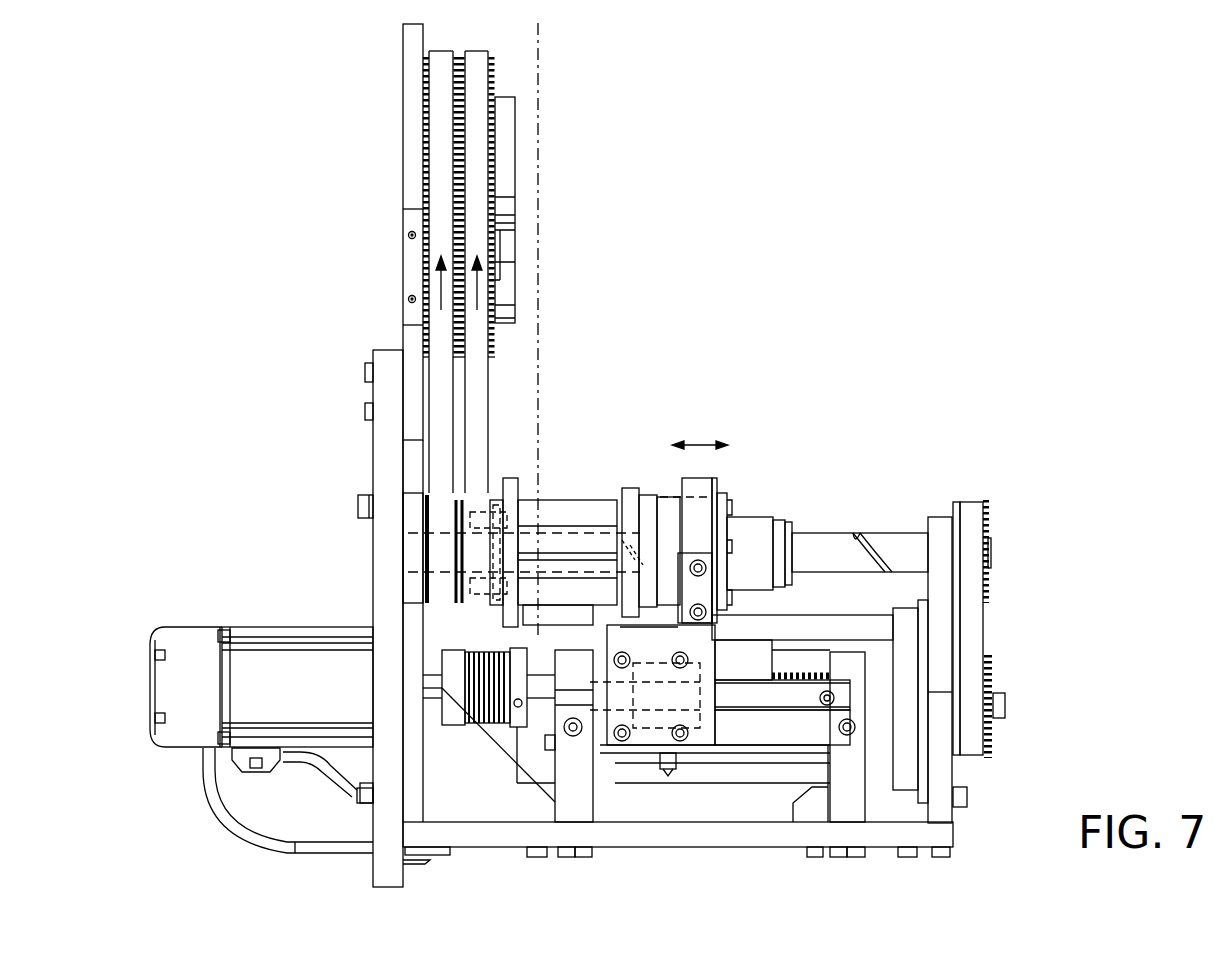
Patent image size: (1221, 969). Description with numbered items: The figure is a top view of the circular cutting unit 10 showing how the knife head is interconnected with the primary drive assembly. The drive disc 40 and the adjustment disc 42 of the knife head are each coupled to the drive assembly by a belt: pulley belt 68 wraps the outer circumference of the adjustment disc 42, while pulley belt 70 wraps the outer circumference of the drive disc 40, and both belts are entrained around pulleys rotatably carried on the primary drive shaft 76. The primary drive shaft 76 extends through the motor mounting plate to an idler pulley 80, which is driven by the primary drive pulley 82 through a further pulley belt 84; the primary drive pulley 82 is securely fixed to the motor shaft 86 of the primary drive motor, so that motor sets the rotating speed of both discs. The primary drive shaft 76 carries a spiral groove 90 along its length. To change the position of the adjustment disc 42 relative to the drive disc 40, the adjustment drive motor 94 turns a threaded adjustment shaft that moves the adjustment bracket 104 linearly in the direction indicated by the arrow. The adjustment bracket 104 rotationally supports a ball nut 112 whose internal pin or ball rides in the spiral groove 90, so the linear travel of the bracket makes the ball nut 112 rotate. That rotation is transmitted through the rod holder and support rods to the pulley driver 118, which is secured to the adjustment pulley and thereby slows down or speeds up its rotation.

The circular cutting unit 10 is at (538, 23).
The drive disc 40 is at (423, 136).
The adjustment disc 42 is at (495, 73).
The pulley belt 68 is at (478, 380).
The pulley belt 70 is at (440, 326).
The primary drive shaft 76 is at (900, 543).
The idler pulley 80 is at (987, 523).
The primary drive pulley 82 is at (993, 733).
The pulley belt 84 is at (972, 618).
The motor shaft 86 is at (1002, 703).
The spiral groove 90 is at (870, 540).
The adjustment drive motor 94 is at (268, 665).
The adjustment bracket 104 is at (700, 478).
The ball nut 112 is at (752, 517).
The pulley driver 118 is at (583, 510).